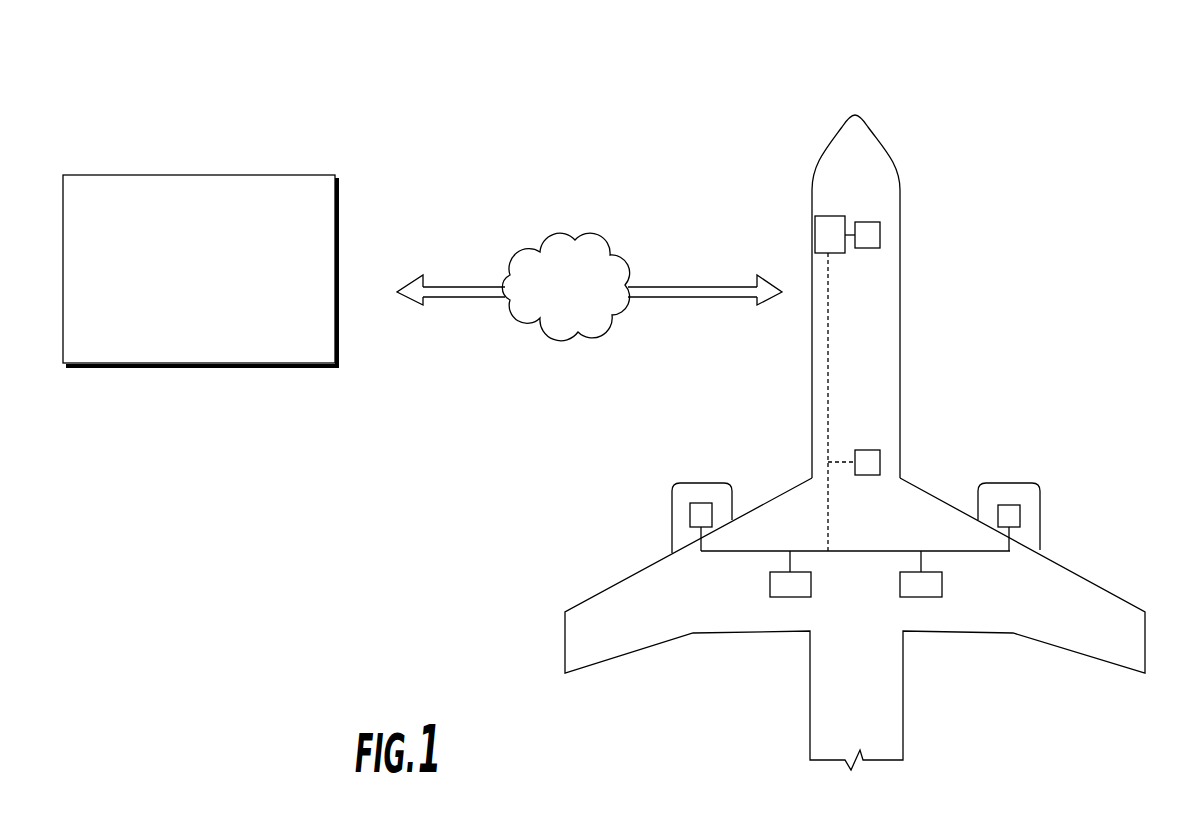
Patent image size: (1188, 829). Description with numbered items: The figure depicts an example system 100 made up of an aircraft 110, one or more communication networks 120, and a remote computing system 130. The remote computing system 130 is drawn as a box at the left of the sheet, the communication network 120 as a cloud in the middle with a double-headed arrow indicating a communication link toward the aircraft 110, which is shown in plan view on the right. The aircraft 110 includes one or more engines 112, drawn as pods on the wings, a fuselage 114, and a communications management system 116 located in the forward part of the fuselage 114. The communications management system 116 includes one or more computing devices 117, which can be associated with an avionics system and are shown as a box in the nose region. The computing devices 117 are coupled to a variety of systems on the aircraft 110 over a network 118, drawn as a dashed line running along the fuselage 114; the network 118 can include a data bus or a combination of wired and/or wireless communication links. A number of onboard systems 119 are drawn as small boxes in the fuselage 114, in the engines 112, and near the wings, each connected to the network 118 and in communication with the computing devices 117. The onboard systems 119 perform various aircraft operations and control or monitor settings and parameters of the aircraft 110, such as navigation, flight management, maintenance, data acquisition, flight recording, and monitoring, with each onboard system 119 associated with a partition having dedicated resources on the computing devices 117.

The system 100 is at (207, 92).
The aircraft 110 is at (940, 312).
The engine 112 is at (697, 483).
The fuselage 114 is at (883, 392).
The communications management system 116 is at (832, 206).
The computing device 117 is at (815, 237).
The network 118 is at (828, 365).
The onboard system 119 is at (880, 237).
The communication network 120 is at (583, 296).
The remote computing system 130 is at (179, 272).